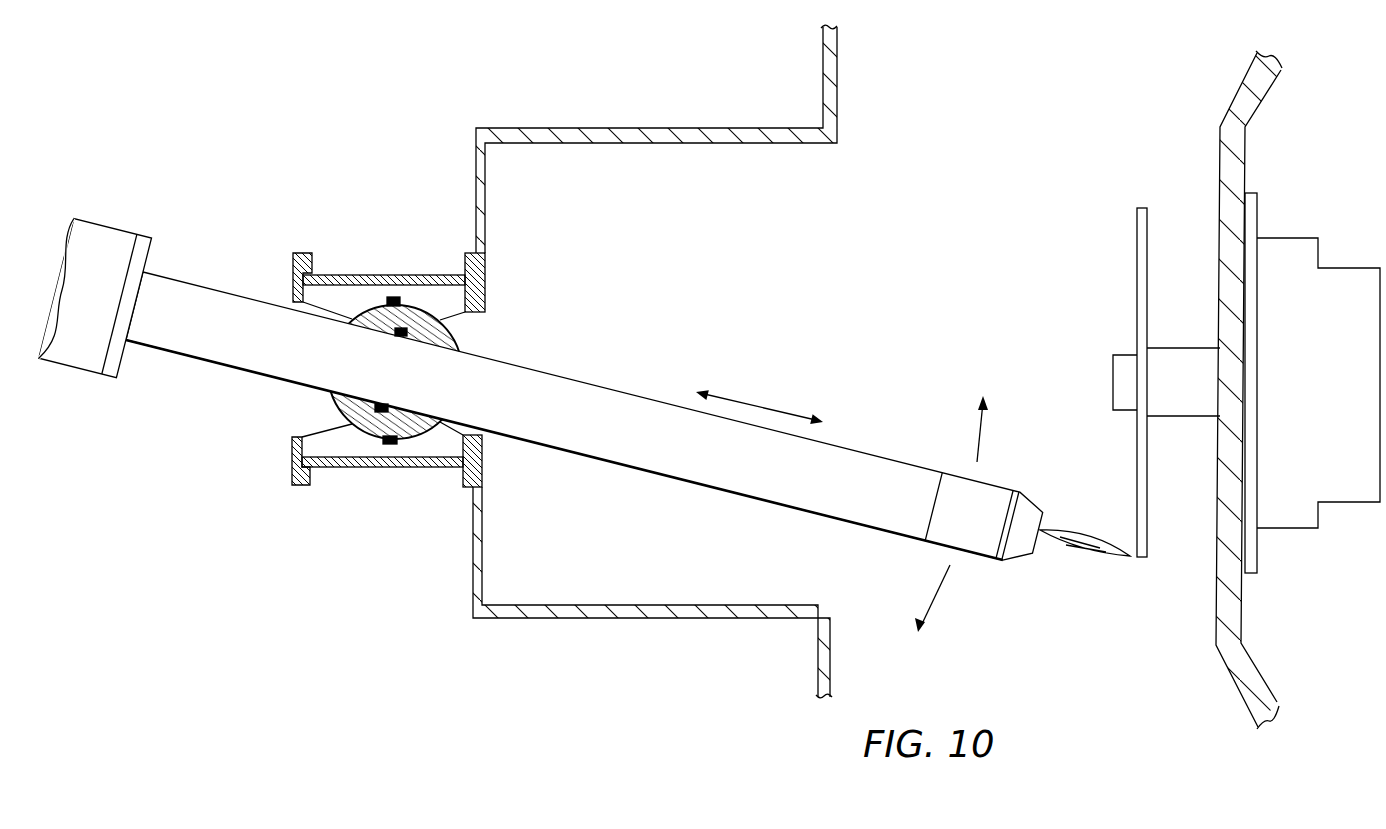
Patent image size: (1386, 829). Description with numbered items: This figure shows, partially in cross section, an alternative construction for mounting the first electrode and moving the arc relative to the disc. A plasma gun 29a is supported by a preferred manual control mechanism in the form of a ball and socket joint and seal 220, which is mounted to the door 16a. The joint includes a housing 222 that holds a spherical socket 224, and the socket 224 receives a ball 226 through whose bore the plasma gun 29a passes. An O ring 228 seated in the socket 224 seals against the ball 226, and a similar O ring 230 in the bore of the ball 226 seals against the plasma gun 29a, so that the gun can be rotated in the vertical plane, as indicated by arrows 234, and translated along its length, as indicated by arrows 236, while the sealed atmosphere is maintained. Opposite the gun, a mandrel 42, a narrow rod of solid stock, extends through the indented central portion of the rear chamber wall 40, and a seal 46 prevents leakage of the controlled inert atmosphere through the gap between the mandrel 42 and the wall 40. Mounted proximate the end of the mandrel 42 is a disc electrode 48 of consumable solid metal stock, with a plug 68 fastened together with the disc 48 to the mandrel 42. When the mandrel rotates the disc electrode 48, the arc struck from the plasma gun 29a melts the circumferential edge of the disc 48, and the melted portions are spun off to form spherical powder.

The door 16a is at (773, 615).
The plasma gun 29a is at (203, 350).
The rear chamber wall 40 is at (1223, 127).
The mandrel 42 is at (1182, 355).
The seal 46 is at (1310, 230).
The disc electrode 48 is at (1138, 235).
The plug 68 is at (1120, 358).
The ball and socket joint and seal 220 is at (285, 265).
The housing 222 is at (437, 467).
The spherical socket 224 is at (357, 414).
The ball 226 is at (360, 432).
The O ring 228 is at (388, 444).
The O ring 230 is at (388, 298).
The arrows 234 is at (983, 428).
The arrows 236 is at (770, 407).